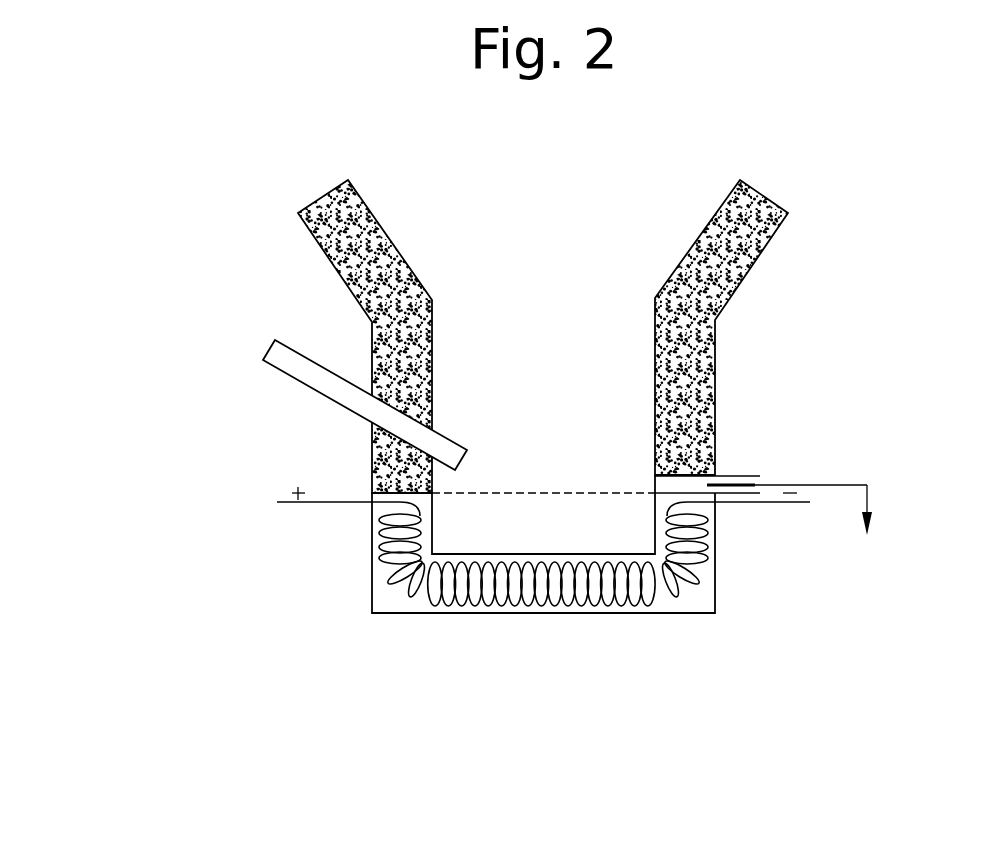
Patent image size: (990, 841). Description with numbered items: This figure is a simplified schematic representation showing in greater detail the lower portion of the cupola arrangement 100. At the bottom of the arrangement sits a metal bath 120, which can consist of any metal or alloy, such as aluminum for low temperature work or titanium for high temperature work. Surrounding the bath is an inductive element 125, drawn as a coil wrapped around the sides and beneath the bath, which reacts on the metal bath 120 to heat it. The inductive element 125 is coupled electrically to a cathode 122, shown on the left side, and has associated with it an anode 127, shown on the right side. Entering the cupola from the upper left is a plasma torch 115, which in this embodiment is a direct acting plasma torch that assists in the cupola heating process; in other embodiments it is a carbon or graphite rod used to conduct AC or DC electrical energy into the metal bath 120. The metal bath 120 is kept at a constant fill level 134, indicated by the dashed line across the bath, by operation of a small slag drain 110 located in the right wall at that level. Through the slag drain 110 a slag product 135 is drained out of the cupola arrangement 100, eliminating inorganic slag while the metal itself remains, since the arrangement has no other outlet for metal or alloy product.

The cupola arrangement 100 is at (570, 712).
The slag drain 110 is at (789, 440).
The plasma torch 115 is at (322, 405).
The metal bath 120 is at (559, 471).
The cathode 122 is at (285, 522).
The inductive element 125 is at (508, 583).
The anode 127 is at (743, 516).
The constant fill level 134 is at (543, 418).
The slag product 135 is at (858, 494).